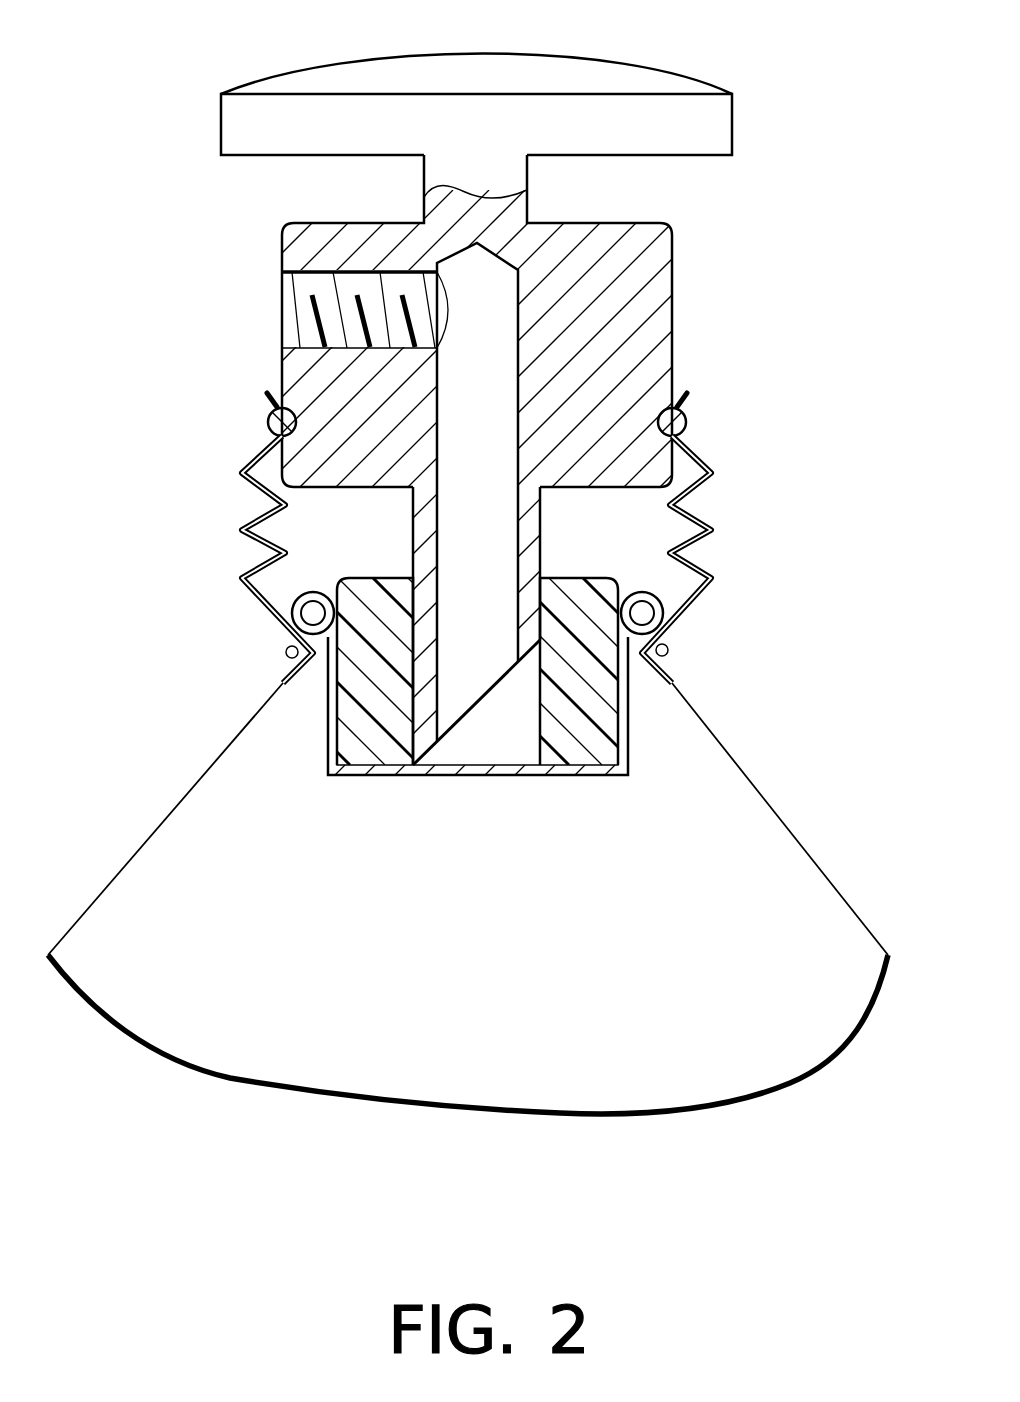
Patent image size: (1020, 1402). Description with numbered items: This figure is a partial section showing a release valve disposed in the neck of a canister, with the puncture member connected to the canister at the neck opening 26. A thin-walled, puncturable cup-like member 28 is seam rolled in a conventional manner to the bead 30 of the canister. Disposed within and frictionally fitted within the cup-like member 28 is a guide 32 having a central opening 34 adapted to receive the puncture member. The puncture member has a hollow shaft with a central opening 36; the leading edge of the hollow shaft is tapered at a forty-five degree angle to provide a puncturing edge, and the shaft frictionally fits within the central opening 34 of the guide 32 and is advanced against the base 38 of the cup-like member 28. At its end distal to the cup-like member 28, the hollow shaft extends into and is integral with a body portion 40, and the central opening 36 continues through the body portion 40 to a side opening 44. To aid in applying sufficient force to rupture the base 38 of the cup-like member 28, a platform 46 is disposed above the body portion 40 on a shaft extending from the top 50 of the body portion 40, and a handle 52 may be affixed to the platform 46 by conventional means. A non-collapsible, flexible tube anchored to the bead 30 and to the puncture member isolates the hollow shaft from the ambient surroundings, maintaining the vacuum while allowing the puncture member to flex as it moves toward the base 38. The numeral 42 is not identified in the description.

The neck opening 26 is at (667, 655).
The cup-like member 28 is at (333, 718).
The bead 30 is at (313, 610).
The guide 32 is at (600, 722).
The central opening 34 is at (415, 720).
The central opening 36 is at (465, 490).
The base 38 is at (395, 773).
The body portion 40 is at (653, 327).
The bore 42 is at (490, 550).
The side opening 44 is at (290, 332).
The platform 46 is at (735, 128).
The top 50 is at (318, 223).
The handle 52 is at (578, 52).